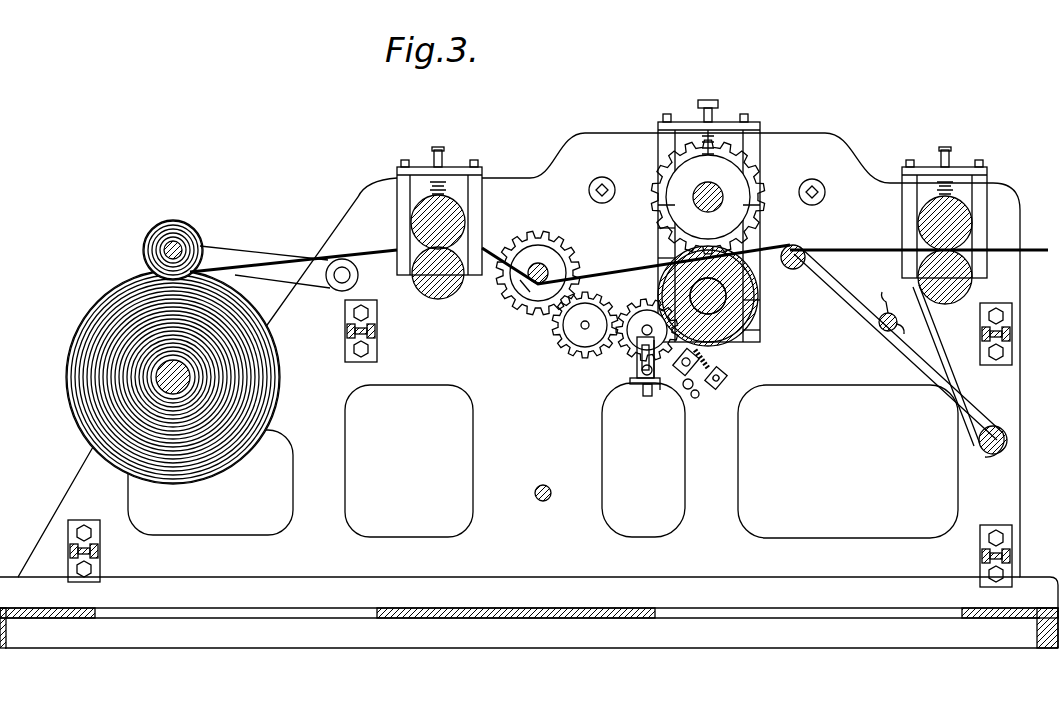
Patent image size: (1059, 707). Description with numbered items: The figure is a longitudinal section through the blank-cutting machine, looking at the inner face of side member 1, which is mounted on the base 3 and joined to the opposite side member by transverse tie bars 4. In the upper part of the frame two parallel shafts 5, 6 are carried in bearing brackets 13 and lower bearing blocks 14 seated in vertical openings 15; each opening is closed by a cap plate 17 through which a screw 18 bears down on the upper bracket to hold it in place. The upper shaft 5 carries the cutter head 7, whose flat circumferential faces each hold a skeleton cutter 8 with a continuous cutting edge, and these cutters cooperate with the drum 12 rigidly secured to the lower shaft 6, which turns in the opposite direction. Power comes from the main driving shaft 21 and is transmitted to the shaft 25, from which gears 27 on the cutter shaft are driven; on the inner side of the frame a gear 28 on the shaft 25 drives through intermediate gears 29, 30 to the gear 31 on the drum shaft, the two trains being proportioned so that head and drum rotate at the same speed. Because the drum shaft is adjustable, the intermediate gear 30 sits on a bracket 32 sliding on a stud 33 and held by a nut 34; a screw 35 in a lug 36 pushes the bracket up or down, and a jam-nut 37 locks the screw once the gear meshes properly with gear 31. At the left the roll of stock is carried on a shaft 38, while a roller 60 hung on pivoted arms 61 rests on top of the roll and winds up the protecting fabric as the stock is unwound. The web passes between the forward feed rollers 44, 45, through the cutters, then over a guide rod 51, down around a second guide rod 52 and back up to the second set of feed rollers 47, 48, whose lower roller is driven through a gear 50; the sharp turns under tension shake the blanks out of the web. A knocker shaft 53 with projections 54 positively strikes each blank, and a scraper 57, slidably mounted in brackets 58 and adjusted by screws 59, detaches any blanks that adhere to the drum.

The side member 1 is at (597, 147).
The base 3 is at (608, 620).
The transverse tie bar 4 is at (378, 322).
The upper shaft 5 is at (722, 196).
The lower shaft 6 is at (758, 302).
The cutter head 7 is at (778, 233).
The cutter 8 is at (760, 212).
The drum 12 is at (760, 290).
The bearing bracket 13 is at (658, 180).
The bearing block 14 is at (665, 258).
The vertical opening 15 is at (672, 230).
The cap plate 17 is at (731, 126).
The screw 18 is at (709, 100).
The main driving shaft 21 is at (539, 500).
The shaft 25 is at (523, 292).
The gear 27 is at (735, 148).
The gear 28 is at (532, 236).
The intermediate gear 29 is at (580, 327).
The intermediate gear 30 is at (637, 343).
The gear 31 is at (760, 330).
The bracket 32 is at (636, 362).
The stud 33 is at (640, 372).
The nut 34 is at (683, 392).
The screw 35 is at (648, 397).
The lug 36 is at (661, 392).
The jam-nut 37 is at (630, 380).
The shaft 38 is at (165, 372).
The upper feed roller 44 is at (412, 222).
The lower feed roller 45 is at (440, 280).
The feed roller 47 is at (963, 217).
The feed roller 48 is at (988, 283).
The gear 50 is at (927, 252).
The guide rod 51 is at (812, 258).
The guide rod 52 is at (980, 444).
The knocker shaft 53 is at (897, 325).
The knocker 54 is at (884, 312).
The scraper 57 is at (715, 356).
The bracket 58 is at (703, 383).
The screw 59 is at (690, 390).
The roller 60 is at (175, 250).
The arm 61 is at (258, 252).